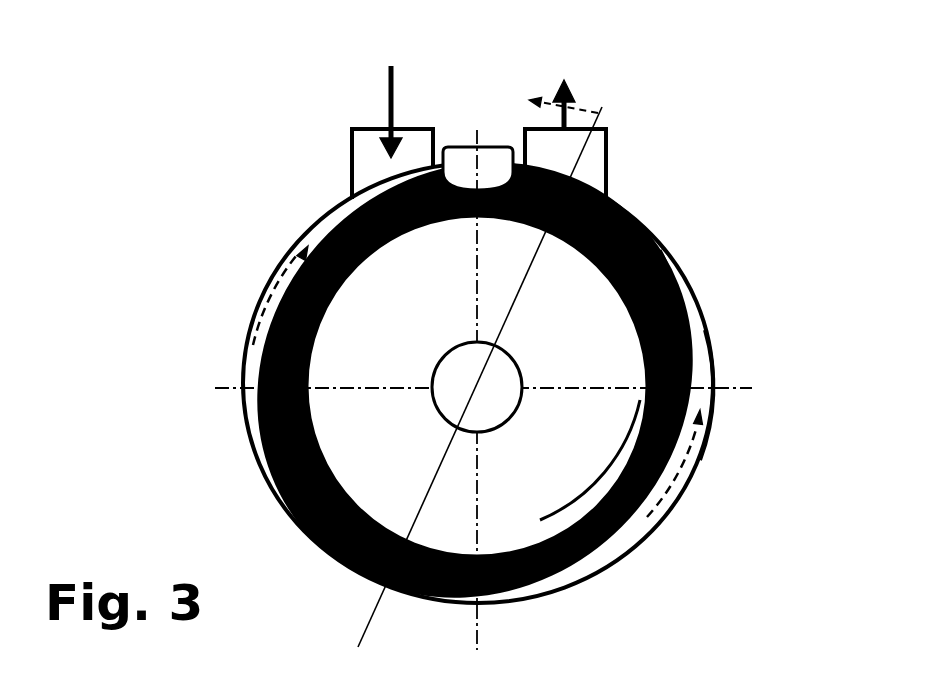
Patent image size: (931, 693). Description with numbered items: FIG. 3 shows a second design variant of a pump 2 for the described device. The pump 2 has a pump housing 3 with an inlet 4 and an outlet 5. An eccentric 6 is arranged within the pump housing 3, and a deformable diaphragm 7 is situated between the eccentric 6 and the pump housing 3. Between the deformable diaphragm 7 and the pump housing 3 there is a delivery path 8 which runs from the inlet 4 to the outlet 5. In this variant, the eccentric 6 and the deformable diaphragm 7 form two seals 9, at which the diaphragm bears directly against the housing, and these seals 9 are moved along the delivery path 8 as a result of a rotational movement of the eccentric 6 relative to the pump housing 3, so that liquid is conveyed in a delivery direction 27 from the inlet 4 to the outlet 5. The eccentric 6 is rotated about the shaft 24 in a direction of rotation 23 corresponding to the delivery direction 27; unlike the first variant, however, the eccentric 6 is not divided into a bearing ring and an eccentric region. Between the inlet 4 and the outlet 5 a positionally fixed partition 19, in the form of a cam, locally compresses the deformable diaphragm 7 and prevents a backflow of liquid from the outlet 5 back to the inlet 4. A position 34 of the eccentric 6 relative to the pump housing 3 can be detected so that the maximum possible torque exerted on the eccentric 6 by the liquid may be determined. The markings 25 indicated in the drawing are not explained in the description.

The pump 2 is at (258, 185).
The pump housing 3 is at (243, 355).
The inlet 4 is at (353, 129).
The outlet 5 is at (530, 128).
The eccentric 6 is at (513, 520).
The deformable diaphragm 7 is at (690, 317).
The delivery path 8 is at (703, 401).
The seal 9 is at (609, 196).
The partition 19 is at (466, 147).
The direction of rotation 23 is at (577, 104).
The shaft 24 is at (582, 499).
The circumferential movement 25 is at (286, 272).
The delivery direction 27 is at (558, 85).
The position 34 is at (358, 647).